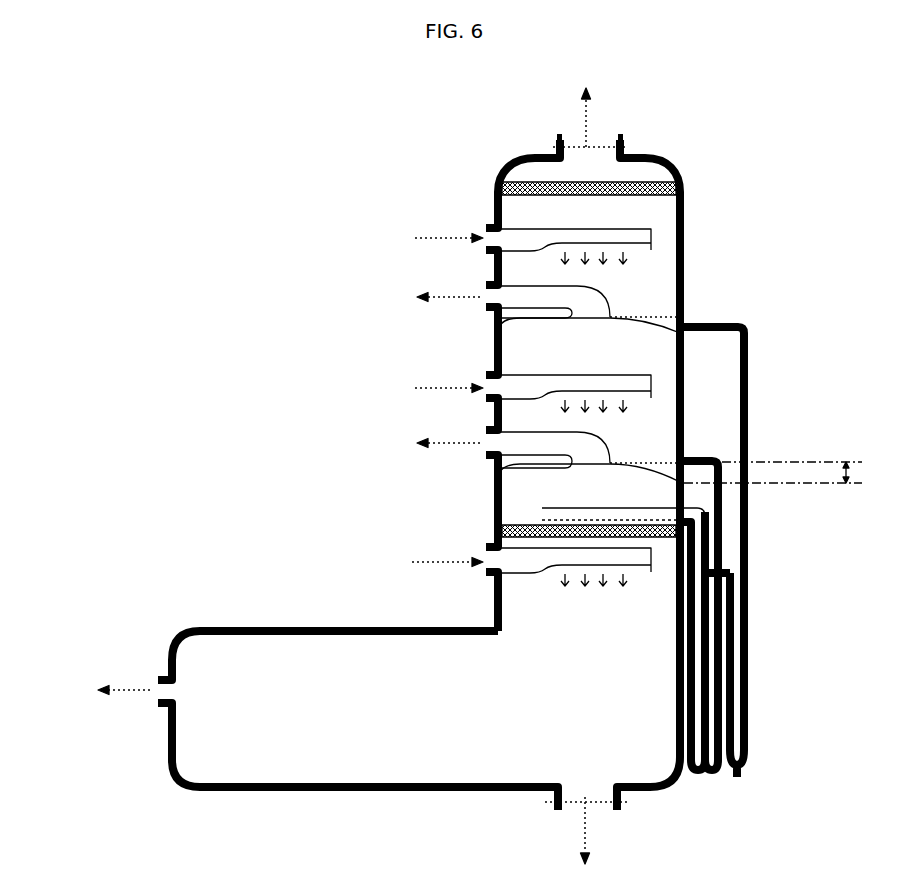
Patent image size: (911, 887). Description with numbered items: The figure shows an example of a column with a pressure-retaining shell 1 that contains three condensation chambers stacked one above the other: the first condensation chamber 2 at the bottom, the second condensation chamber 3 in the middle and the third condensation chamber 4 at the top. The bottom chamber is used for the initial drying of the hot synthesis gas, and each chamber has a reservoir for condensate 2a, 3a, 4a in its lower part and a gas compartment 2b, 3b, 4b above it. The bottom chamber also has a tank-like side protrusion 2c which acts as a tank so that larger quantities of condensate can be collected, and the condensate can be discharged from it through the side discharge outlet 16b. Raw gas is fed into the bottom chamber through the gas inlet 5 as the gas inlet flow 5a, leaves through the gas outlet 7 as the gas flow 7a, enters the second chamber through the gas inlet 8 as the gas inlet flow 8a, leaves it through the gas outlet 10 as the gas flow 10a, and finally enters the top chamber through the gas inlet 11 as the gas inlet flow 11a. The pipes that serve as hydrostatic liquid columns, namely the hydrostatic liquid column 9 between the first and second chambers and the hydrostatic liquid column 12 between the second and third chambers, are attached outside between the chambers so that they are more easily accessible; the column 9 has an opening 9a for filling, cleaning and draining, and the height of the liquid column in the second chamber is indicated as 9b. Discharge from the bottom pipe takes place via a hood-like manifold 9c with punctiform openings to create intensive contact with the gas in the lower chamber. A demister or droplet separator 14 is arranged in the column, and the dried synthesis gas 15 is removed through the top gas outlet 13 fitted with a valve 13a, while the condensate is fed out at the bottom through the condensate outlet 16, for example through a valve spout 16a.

The column with pressure-retaining shell 1 is at (487, 172).
The first condensation chamber 2 is at (490, 595).
The reservoir for condensate in the first condensation chamber 2a is at (585, 658).
The gas compartment in the first condensation chamber 2b is at (622, 489).
The tank-like protrusion in the first condensation chamber 2c is at (318, 628).
The second condensation chamber 3 is at (490, 409).
The reservoir for condensate in the second condensation chamber 3a is at (492, 468).
The gas compartment in the second condensation chamber 3b is at (592, 348).
The third condensation chamber 4 is at (490, 265).
The reservoir for condensate in the third condensation chamber 4a is at (492, 322).
The gas compartment in the third condensation chamber 4b is at (535, 210).
The gas inlet in the first condensation chamber 5 is at (410, 560).
The gas inlet flow in the first condensation chamber 5a is at (574, 582).
The gas outlet from the first condensation chamber 7 is at (415, 441).
The gas flow from the first condensation chamber 7a is at (535, 451).
The gas inlet in the second condensation chamber 8 is at (415, 386).
The gas inlet flow in the second condensation chamber 8a is at (574, 408).
The hydrostatic liquid column between the first and second condensation chambers 9 is at (713, 772).
The opening for filling, cleaning and draining the hydrostatic liquid column 9a is at (750, 684).
The height of the liquid column in the second condensation chamber 9b is at (790, 472).
The gas inlet in the hydrostatic liquid column as a hood with punctiform openings 9c is at (580, 505).
The gas outlet from the second condensation chamber 10 is at (415, 294).
The gas flow from the second condensation chamber 10a is at (535, 302).
The gas inlet in the third condensation chamber 11 is at (415, 234).
The gas inlet flow in the third condensation chamber 11a is at (574, 257).
The hydrostatic liquid column between the second and third condensation chambers 12 is at (750, 716).
The gas outlet for the dried gas 13 is at (553, 146).
The valve 13a is at (625, 146).
The demister or droplet separator 14 is at (566, 196).
The effluent dried gas 15 is at (585, 88).
The outlet for the condensate 16 is at (596, 846).
The valve 16a is at (627, 803).
The discharge of the condensate or feed for other media 16b is at (97, 689).